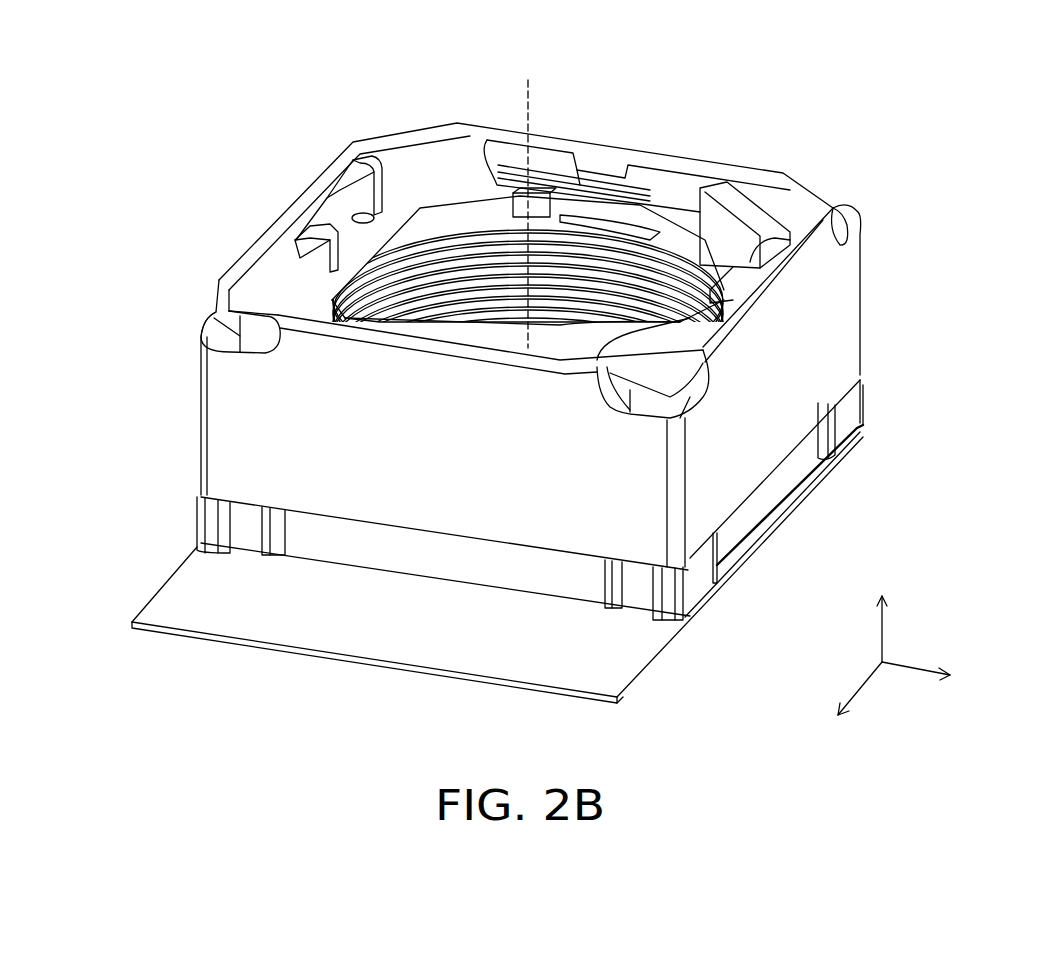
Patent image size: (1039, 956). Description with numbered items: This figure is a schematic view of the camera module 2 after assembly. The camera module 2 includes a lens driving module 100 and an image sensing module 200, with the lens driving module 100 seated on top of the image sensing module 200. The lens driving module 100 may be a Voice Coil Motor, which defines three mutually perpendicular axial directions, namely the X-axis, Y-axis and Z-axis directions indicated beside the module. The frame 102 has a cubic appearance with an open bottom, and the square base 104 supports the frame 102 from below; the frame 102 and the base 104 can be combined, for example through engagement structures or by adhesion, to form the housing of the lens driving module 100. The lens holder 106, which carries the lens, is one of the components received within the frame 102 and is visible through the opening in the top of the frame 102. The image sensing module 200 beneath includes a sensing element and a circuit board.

The camera module 2 is at (97, 80).
The lens driving module 100 is at (198, 400).
The frame 102 is at (825, 315).
The base 104 is at (780, 481).
The lens holder 106 is at (643, 223).
The image sensing module 200 is at (170, 572).